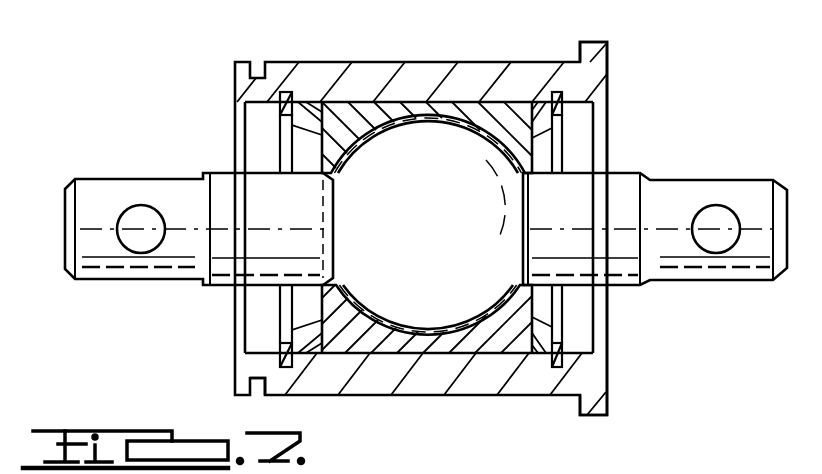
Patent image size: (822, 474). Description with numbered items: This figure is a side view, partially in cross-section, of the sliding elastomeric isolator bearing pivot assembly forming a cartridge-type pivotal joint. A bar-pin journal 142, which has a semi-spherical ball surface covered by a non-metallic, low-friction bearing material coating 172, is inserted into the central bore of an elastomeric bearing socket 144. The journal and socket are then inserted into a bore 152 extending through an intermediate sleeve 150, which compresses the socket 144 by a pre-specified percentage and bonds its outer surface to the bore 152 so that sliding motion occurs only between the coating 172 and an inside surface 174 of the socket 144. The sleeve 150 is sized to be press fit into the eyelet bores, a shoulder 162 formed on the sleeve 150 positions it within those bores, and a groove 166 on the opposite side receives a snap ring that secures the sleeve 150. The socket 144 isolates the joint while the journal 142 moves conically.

The bar-pin journal 142 is at (165, 296).
The bearing socket 144 is at (507, 115).
The intermediate sleeve 150 is at (317, 78).
The bore 152 is at (410, 100).
The shoulder 162 is at (582, 400).
The groove 166 is at (246, 382).
The bearing material coating 172 is at (452, 215).
The inside surface 174 is at (428, 331).